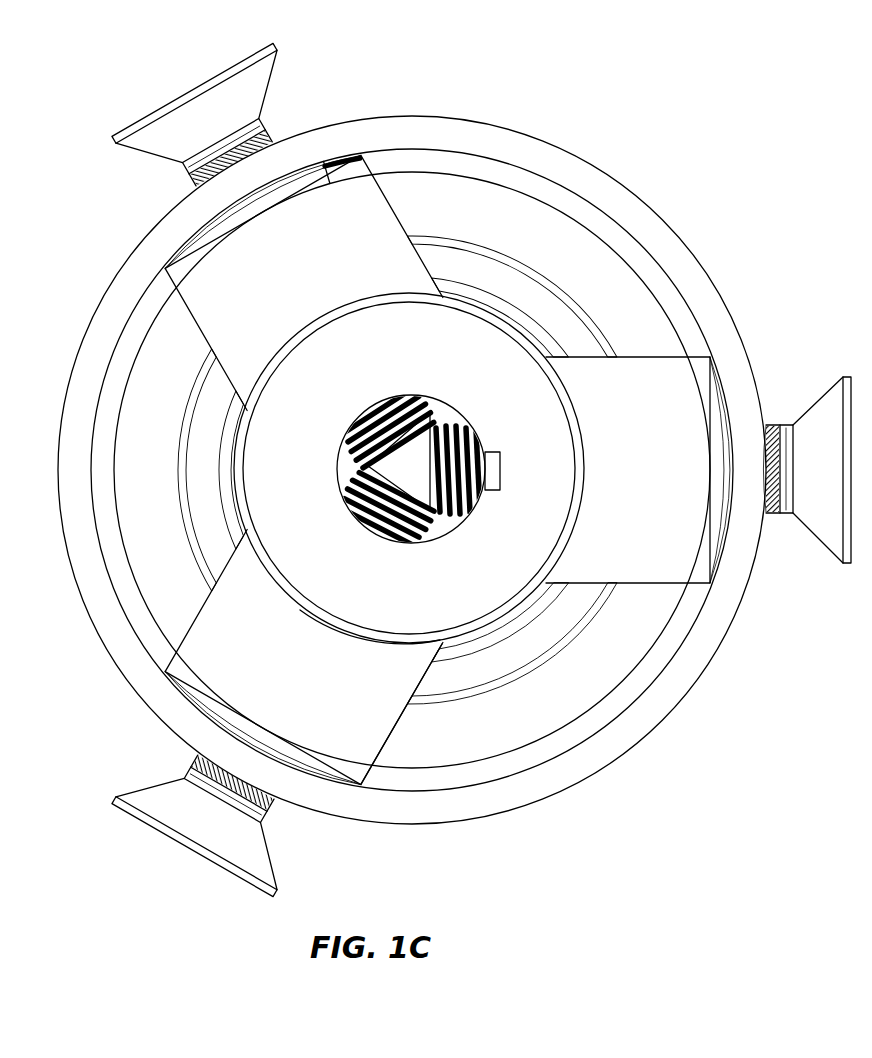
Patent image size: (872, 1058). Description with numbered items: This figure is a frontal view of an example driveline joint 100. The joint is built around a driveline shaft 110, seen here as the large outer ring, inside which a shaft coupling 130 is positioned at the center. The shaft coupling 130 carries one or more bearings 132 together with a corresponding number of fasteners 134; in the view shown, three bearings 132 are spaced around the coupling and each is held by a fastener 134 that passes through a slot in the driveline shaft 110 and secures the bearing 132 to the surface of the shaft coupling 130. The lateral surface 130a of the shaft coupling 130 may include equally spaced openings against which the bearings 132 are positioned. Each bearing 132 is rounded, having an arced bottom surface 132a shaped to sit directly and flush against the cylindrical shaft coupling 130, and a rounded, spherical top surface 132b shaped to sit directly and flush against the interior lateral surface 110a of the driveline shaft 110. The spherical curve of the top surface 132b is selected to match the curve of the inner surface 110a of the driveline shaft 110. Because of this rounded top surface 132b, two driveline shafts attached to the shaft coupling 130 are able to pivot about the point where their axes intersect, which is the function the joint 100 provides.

The driveline joint 100 is at (737, 94).
The driveline shaft 110 is at (440, 132).
The interior lateral surface of the driveline shaft 110a is at (353, 146).
The shaft coupling 130 is at (497, 563).
The lateral surface of the shaft coupling 130a is at (372, 616).
The bearing 132 is at (672, 548).
The arced bottom surface of the bearing 132a is at (380, 662).
The rounded top surface of the bearing 132b is at (331, 177).
The fastener 134 is at (257, 92).